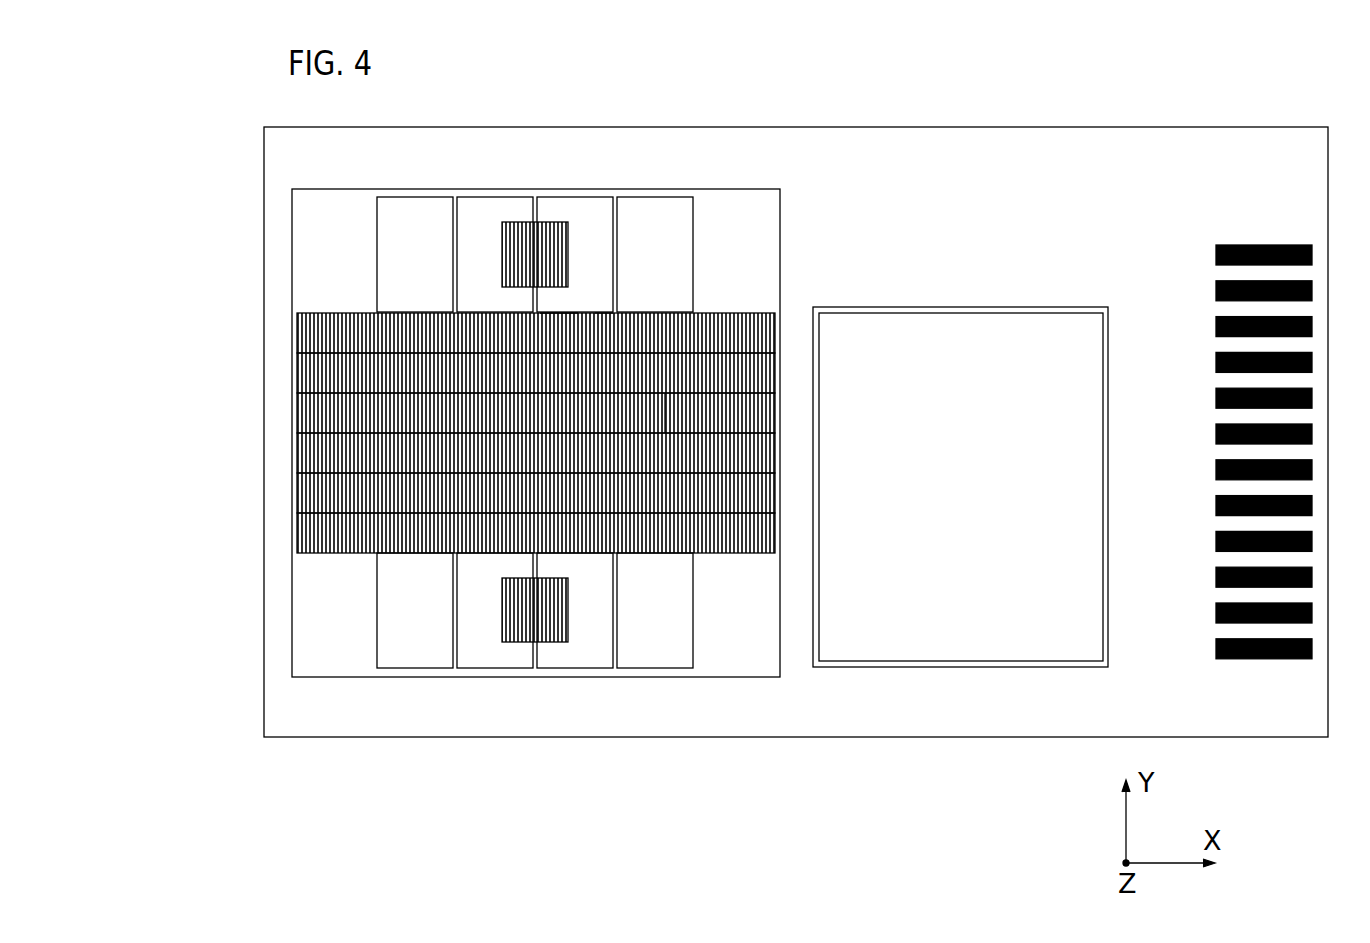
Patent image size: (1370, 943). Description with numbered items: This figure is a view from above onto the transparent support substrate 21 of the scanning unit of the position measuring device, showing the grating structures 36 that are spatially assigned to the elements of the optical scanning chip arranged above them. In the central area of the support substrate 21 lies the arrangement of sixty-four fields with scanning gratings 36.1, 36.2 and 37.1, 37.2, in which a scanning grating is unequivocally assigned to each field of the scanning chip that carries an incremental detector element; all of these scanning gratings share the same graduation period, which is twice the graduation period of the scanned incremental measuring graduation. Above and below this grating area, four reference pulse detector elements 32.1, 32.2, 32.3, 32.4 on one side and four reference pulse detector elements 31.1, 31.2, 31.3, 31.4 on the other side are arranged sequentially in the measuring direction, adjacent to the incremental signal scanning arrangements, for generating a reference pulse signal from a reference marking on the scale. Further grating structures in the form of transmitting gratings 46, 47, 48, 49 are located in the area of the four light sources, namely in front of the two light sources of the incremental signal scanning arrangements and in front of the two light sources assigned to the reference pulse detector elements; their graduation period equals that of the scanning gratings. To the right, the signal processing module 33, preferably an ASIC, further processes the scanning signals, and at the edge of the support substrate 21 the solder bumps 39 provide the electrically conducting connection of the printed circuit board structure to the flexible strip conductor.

The support substrate 21 is at (324, 712).
The grating structures 36 is at (325, 565).
The scanning grating 36.1 is at (318, 330).
The scanning grating 36.2 is at (315, 378).
The transmitting grating 48 is at (468, 433).
The transmitting grating 49 is at (663, 415).
The reference pulse detector element 32.1 is at (403, 243).
The reference pulse detector element 32.2 is at (473, 238).
The reference pulse detector element 32.3 is at (585, 232).
The reference pulse detector element 32.4 is at (690, 210).
The reference pulse detector element 31.1 is at (414, 636).
The reference pulse detector element 31.2 is at (485, 648).
The reference pulse detector element 31.3 is at (588, 642).
The reference pulse detector element 31.4 is at (660, 645).
The scanning grating 37.1 is at (565, 313).
The scanning grating 37.2 is at (610, 313).
The transmitting grating 46 is at (540, 235).
The transmitting grating 47 is at (528, 630).
The signal processing module 33 is at (935, 640).
The solder bumps 39 is at (1265, 658).